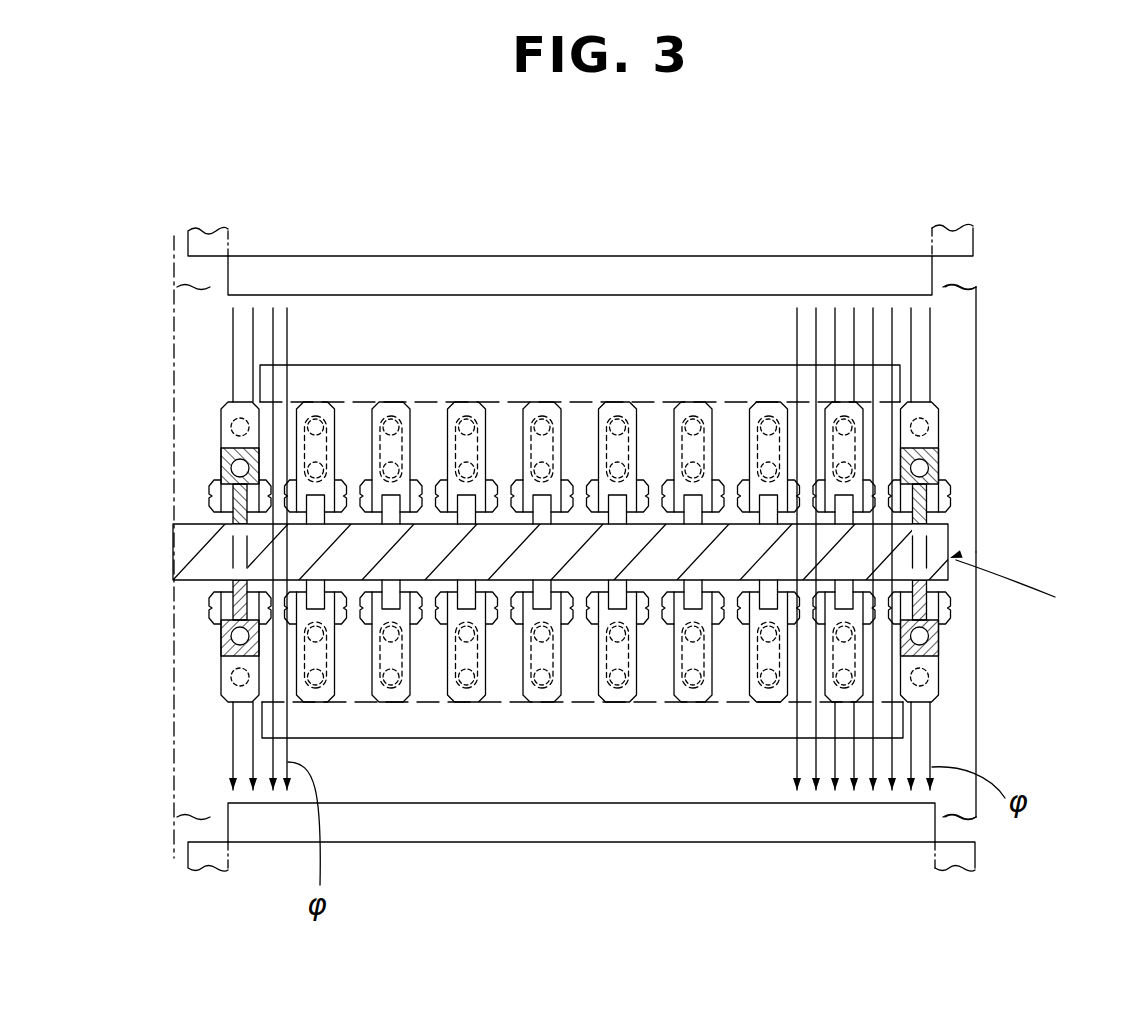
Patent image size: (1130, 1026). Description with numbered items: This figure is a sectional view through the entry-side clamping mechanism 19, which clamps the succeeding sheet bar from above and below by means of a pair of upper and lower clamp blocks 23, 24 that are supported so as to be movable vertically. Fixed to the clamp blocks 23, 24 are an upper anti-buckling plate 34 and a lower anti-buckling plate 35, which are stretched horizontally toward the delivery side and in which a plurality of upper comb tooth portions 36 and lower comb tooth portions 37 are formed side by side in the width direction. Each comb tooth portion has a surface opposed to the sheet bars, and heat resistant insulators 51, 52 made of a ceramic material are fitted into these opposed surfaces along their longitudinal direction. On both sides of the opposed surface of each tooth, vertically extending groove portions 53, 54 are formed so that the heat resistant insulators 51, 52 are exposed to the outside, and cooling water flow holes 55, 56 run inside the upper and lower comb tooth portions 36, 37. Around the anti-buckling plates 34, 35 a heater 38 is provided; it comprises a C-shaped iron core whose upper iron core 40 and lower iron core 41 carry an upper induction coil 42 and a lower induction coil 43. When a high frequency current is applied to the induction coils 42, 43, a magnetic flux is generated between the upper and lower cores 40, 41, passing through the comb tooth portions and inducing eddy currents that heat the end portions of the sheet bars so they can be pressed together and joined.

The entry-side clamping mechanism 19 is at (1008, 439).
The upper clamp block 23 is at (965, 345).
The lower clamp block 24 is at (965, 745).
The upper anti-buckling plate 34 is at (661, 252).
The lower anti-buckling plate 35 is at (656, 847).
The upper comb tooth portion 36 is at (221, 410).
The lower comb tooth portion 37 is at (237, 677).
The heater 38 is at (1012, 261).
The upper iron core 40 is at (927, 275).
The lower iron core 41 is at (920, 827).
The upper induction coil 42 is at (976, 236).
The lower induction coil 43 is at (973, 855).
The heat resistant insulator 51 is at (477, 525).
The heat resistant insulator 52 is at (470, 590).
The groove portion 53 is at (210, 490).
The groove portion 54 is at (230, 584).
The cooling water flow hole 55 is at (222, 446).
The cooling water flow hole 56 is at (233, 637).